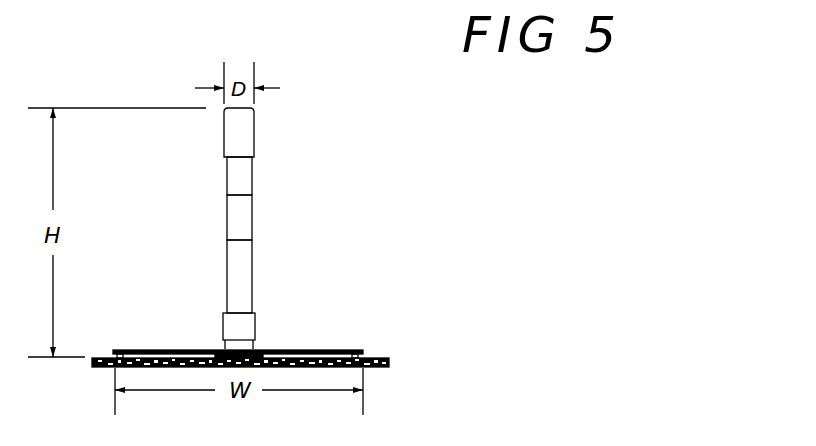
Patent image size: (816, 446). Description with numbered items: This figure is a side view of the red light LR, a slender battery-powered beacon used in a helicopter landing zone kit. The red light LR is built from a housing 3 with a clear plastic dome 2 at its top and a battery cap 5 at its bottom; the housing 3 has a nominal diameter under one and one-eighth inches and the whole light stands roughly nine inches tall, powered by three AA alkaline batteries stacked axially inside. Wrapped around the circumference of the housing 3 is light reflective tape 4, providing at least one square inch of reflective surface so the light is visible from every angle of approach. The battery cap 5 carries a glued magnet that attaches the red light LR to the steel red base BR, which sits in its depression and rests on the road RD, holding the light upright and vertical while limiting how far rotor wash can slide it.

The dome 2 is at (242, 132).
The red light LR is at (240, 178).
The light reflective tape 4 is at (238, 227).
The housing 3 is at (234, 261).
The battery cap 5 is at (228, 321).
The red base BR is at (311, 351).
The road RD is at (382, 360).